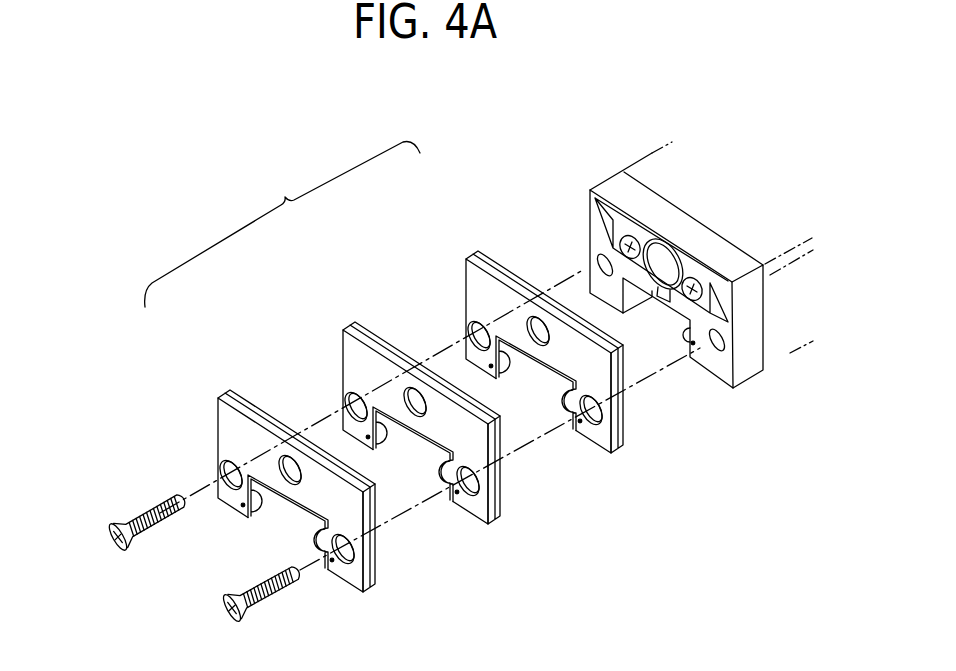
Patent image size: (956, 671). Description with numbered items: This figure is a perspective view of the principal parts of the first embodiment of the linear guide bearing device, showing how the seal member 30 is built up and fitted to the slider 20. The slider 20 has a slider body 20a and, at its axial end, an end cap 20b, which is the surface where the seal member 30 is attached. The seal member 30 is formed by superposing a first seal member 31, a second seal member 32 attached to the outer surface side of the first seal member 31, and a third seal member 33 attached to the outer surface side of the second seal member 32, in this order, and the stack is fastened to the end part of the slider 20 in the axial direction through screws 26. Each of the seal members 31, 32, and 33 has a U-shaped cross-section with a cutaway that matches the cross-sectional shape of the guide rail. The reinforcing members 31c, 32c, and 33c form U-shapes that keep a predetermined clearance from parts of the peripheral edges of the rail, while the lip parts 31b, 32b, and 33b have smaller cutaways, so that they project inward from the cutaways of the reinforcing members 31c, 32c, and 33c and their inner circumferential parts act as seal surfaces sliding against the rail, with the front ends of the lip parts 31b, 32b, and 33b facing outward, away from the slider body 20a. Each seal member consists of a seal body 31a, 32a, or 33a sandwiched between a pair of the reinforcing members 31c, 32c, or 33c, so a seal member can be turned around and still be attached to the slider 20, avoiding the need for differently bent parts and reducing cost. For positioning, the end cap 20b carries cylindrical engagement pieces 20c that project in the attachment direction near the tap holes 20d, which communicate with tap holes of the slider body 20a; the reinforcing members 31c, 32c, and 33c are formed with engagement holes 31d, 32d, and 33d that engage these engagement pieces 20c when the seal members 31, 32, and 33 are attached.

The slider 20 is at (651, 247).
The slider body 20a is at (652, 153).
The end cap 20b is at (617, 186).
The engagement piece 20c is at (693, 345).
The tap hole 20d is at (601, 257).
The screw 26 is at (110, 549).
The seal member 30 is at (282, 224).
The first seal member 31 is at (546, 336).
The seal body 31a is at (490, 263).
The lip part 31b is at (502, 380).
The reinforcing member 31c is at (601, 440).
The engagement hole 31d is at (488, 366).
The second seal member 32 is at (419, 402).
The seal body 32a is at (368, 326).
The lip part 32b is at (379, 450).
The reinforcing member 32c is at (477, 503).
The engagement hole 32d is at (367, 437).
The third seal member 33 is at (302, 475).
The seal body 33a is at (245, 395).
The lip part 33b is at (254, 513).
The reinforcing member 33c is at (354, 571).
The engagement hole 33d is at (243, 505).